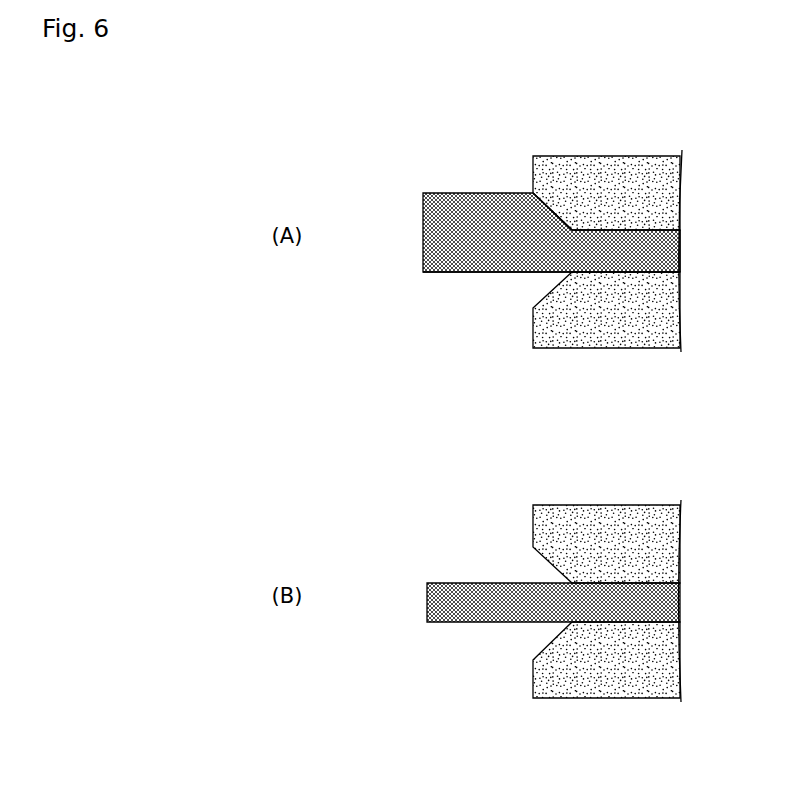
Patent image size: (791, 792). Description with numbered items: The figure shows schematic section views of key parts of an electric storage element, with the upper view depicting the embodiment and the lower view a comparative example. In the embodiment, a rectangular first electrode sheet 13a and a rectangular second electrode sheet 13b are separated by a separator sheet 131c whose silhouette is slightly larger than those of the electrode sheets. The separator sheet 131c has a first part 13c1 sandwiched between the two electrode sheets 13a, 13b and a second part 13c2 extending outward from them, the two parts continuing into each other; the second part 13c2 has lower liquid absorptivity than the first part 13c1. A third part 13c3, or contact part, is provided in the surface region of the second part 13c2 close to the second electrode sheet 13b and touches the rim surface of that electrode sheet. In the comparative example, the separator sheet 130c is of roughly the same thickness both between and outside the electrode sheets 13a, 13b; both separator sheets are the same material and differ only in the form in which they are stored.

The first electrode sheet 13a is at (613, 333).
The second electrode sheet 13b is at (613, 165).
The separator sheet 131c is at (443, 185).
The separator sheet 130c is at (450, 574).
The first part 13c1 is at (676, 250).
The second part 13c2 is at (482, 260).
The third part 13c3 is at (557, 212).